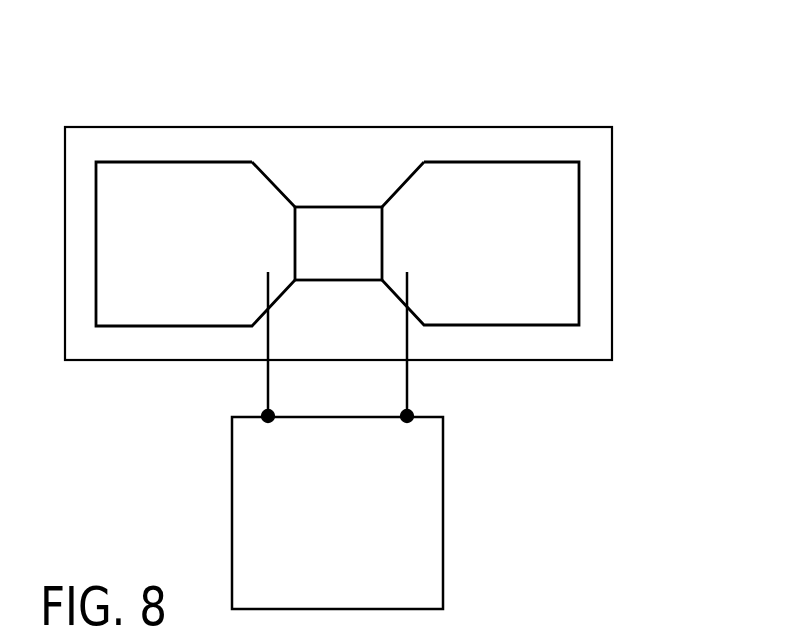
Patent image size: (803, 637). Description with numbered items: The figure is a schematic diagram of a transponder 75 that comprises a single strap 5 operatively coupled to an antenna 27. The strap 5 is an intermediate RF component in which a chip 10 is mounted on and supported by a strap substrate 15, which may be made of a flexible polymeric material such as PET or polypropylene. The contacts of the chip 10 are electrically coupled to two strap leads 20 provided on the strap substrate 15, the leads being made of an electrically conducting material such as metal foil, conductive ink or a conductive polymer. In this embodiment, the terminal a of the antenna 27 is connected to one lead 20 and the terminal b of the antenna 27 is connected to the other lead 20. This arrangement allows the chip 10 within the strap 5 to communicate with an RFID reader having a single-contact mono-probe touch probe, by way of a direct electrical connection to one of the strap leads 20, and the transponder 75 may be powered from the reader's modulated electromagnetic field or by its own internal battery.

The strap 5 is at (612, 162).
The chip 10 is at (330, 215).
The strap substrate 15 is at (438, 135).
The strap leads 20 is at (165, 175).
The antenna 27 is at (443, 518).
The transponder 75 is at (293, 68).
The terminal a is at (270, 422).
The terminal b is at (405, 422).